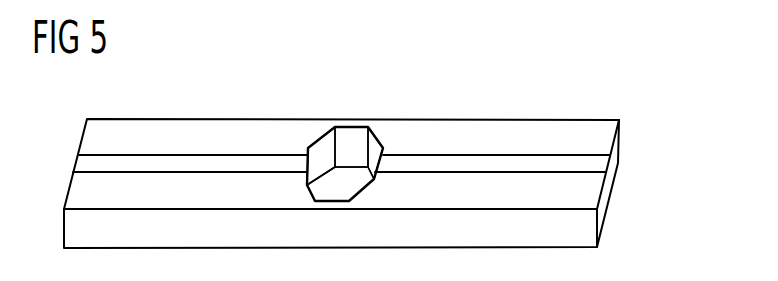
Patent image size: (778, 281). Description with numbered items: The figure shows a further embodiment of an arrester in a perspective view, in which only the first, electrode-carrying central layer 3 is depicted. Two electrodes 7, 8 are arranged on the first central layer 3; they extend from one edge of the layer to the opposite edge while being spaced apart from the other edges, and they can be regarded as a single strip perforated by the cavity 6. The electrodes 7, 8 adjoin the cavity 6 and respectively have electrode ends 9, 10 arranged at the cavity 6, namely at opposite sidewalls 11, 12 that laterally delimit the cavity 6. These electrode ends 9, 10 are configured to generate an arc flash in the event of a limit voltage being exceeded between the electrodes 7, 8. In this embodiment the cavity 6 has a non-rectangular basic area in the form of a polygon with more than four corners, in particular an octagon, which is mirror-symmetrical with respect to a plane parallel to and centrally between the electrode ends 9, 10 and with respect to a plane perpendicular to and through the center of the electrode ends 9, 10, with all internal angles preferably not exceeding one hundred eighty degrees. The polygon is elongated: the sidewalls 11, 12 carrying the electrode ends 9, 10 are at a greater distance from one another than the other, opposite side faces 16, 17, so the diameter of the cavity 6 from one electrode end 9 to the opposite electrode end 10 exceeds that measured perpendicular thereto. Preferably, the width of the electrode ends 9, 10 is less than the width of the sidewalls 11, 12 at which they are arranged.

The first central layer 3 is at (592, 190).
The cavity 6 is at (325, 157).
The electrode 7 is at (92, 165).
The electrode 8 is at (598, 163).
The electrode end 9 is at (303, 160).
The electrode end 10 is at (386, 159).
The sidewall 11 is at (302, 172).
The sidewall 12 is at (384, 167).
The side face 16 is at (329, 197).
The side face 17 is at (353, 136).